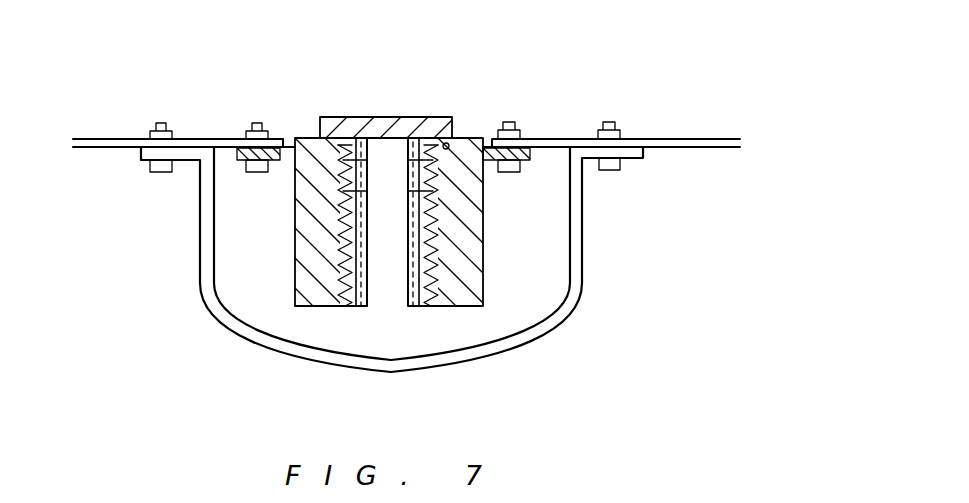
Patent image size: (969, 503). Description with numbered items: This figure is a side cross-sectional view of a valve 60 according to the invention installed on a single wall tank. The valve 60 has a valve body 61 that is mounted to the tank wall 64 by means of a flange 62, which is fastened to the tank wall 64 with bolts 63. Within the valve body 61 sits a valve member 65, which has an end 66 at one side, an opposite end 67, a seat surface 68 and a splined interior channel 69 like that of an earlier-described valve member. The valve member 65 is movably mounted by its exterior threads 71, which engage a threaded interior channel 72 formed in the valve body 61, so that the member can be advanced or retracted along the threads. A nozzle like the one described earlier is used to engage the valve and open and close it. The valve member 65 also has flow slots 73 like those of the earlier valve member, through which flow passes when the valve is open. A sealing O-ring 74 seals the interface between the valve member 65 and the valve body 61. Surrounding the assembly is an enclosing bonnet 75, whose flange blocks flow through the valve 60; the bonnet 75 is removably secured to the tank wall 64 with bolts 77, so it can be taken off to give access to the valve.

The valve 60 is at (468, 135).
The valve body 61 is at (472, 273).
The flange 62 is at (519, 166).
The bolts 63 is at (254, 123).
The tank wall 64 is at (697, 138).
The valve member 65 is at (327, 117).
The end 66 is at (420, 117).
The end 67 is at (433, 305).
The seat surface 68 is at (346, 140).
The splined interior channel 69 is at (360, 275).
The exterior threads 71 is at (440, 226).
The threaded interior channel 72 is at (340, 232).
The flow slots 73 is at (430, 182).
The sealing O-ring 74 is at (305, 171).
The enclosing bonnet 75 is at (283, 360).
The bolts 77 is at (160, 172).